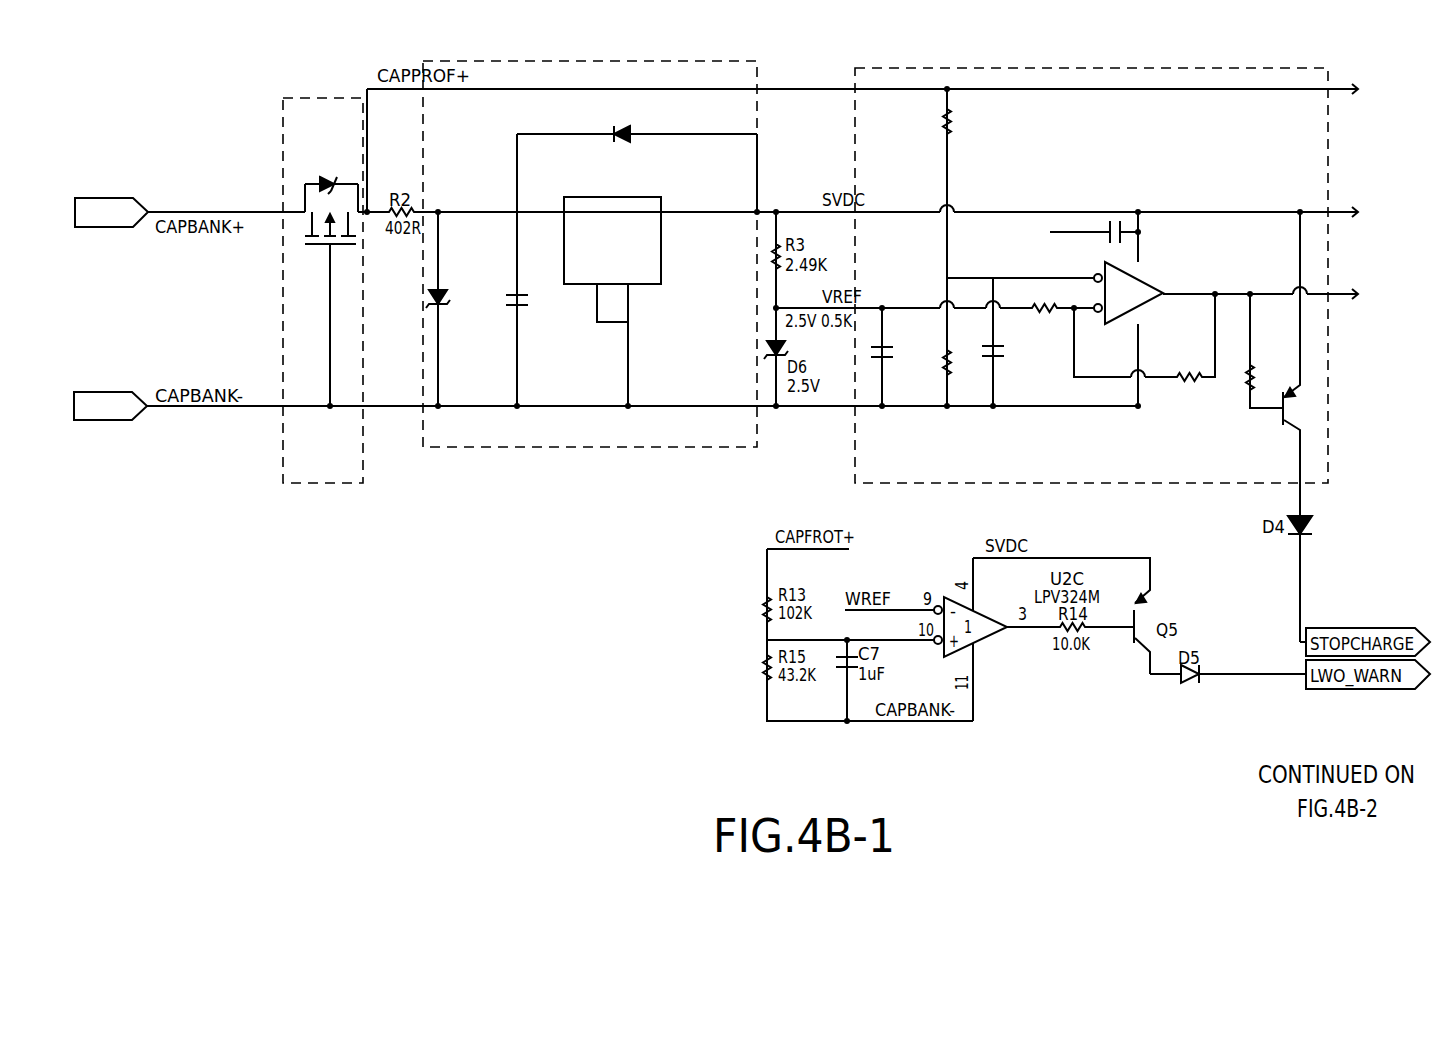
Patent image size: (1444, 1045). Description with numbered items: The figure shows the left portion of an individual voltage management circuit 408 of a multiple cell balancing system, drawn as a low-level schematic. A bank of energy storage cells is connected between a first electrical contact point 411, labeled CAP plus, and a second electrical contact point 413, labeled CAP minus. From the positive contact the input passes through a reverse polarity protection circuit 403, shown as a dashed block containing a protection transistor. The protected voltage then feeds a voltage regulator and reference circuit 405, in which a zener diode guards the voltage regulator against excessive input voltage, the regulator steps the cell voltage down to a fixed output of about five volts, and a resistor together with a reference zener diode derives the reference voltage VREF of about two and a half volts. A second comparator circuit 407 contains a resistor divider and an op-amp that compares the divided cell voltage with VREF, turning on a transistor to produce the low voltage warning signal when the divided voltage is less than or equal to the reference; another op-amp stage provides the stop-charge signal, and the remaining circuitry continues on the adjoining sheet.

The individual voltage management circuit 408 is at (188, 116).
The reverse polarity protection circuit 403 is at (320, 96).
The voltage regulator and reference circuit 405 is at (613, 60).
The second comparator circuit 407 is at (1058, 67).
The first electrical contact point 411 is at (110, 228).
The second electrical contact point 413 is at (110, 421).